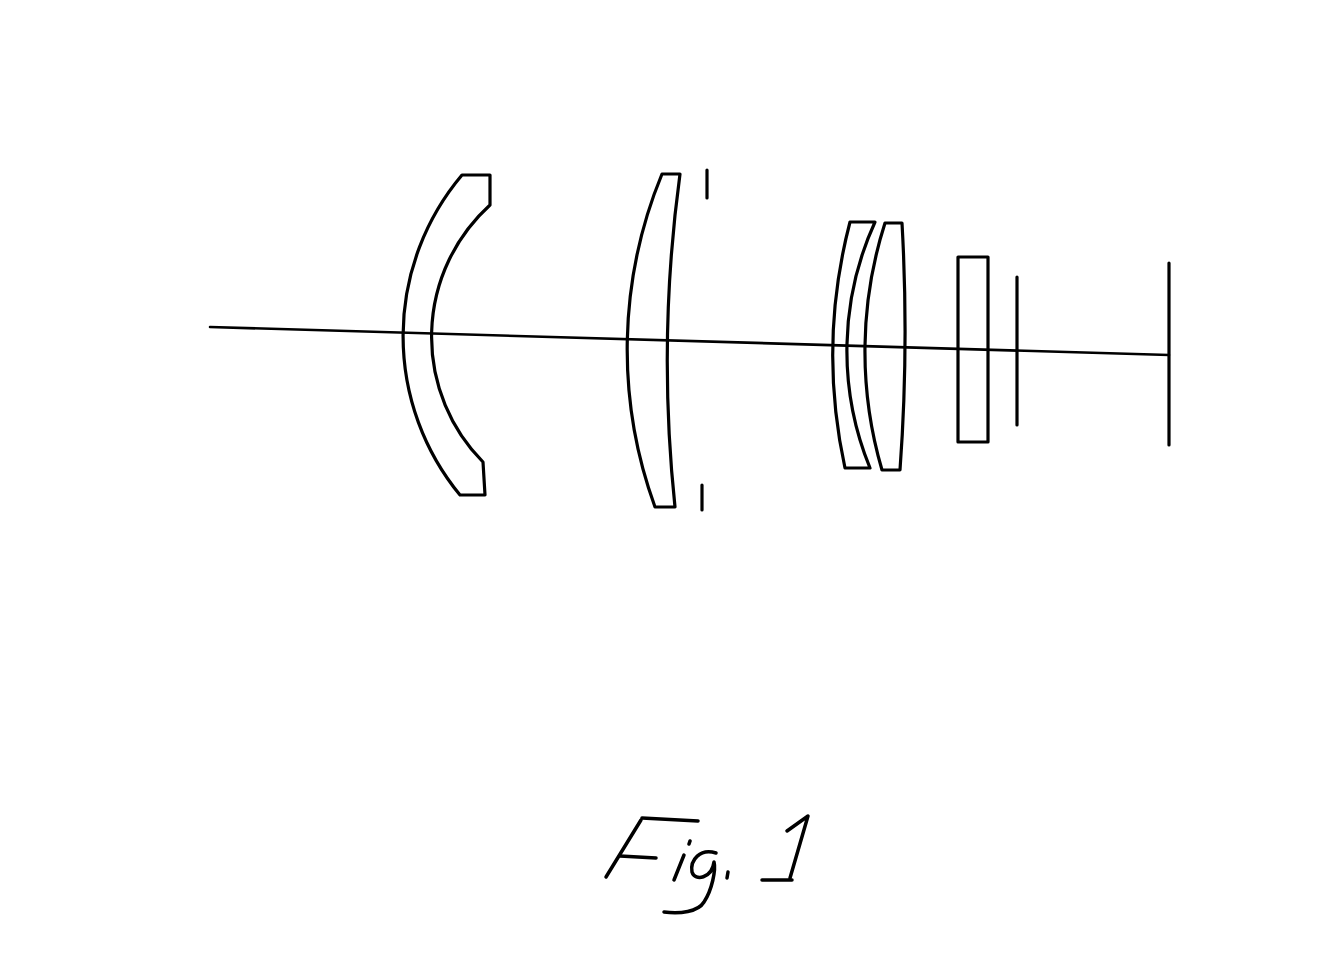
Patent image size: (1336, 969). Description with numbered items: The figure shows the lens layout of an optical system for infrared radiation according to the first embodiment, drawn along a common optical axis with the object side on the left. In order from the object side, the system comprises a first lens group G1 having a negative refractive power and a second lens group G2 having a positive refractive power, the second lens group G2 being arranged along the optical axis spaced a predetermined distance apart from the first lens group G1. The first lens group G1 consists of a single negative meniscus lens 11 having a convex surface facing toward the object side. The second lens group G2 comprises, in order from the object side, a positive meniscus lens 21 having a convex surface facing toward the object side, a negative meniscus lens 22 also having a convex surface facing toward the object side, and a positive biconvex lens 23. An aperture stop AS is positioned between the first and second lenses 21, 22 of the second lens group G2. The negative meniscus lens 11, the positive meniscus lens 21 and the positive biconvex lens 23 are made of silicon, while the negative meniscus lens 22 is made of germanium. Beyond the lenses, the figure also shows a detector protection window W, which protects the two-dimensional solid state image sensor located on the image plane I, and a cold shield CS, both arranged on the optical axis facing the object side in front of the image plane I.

The negative meniscus lens 11 is at (476, 175).
The positive meniscus lens 21 is at (675, 172).
The aperture stop AS is at (709, 177).
The negative meniscus lens 22 is at (862, 220).
The positive biconvex lens 23 is at (900, 220).
The detector protection window W is at (980, 257).
The cold shield CS is at (1020, 277).
The image plane I is at (1172, 267).
The first lens group G1 is at (522, 523).
The second lens group G2 is at (930, 535).